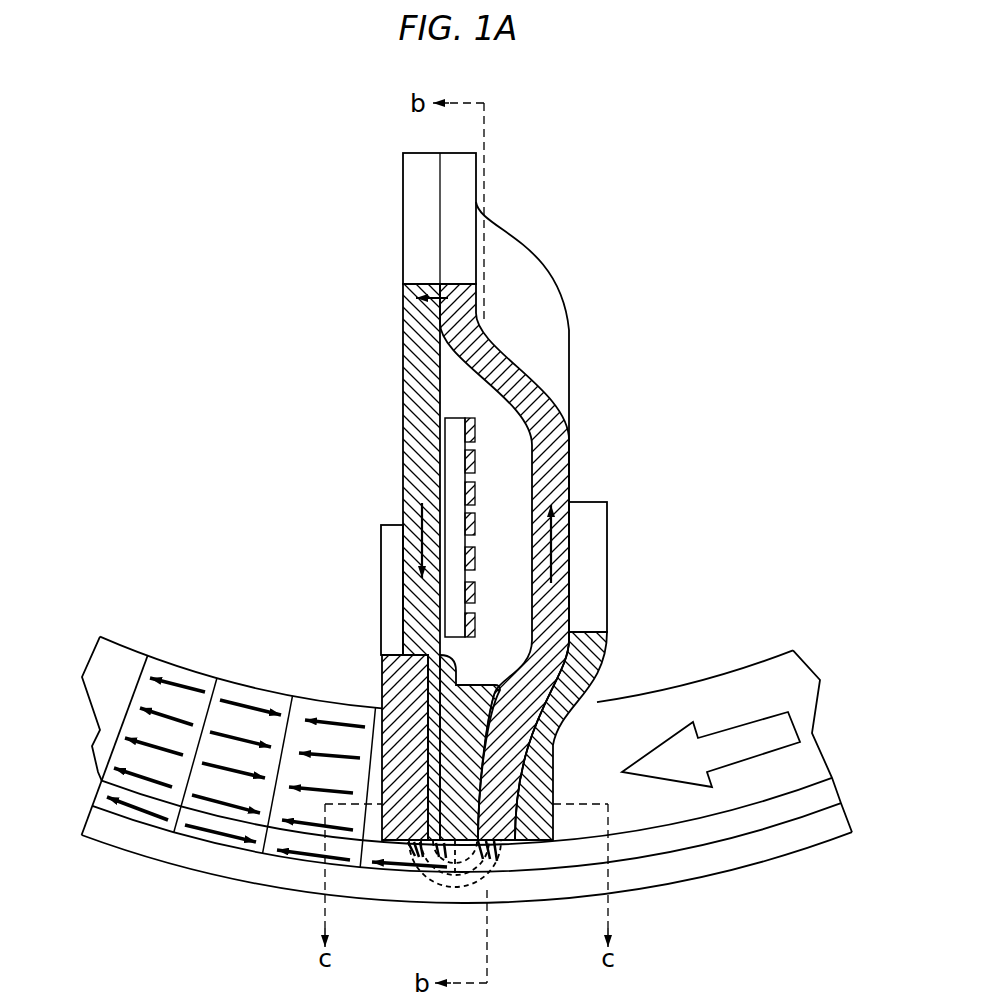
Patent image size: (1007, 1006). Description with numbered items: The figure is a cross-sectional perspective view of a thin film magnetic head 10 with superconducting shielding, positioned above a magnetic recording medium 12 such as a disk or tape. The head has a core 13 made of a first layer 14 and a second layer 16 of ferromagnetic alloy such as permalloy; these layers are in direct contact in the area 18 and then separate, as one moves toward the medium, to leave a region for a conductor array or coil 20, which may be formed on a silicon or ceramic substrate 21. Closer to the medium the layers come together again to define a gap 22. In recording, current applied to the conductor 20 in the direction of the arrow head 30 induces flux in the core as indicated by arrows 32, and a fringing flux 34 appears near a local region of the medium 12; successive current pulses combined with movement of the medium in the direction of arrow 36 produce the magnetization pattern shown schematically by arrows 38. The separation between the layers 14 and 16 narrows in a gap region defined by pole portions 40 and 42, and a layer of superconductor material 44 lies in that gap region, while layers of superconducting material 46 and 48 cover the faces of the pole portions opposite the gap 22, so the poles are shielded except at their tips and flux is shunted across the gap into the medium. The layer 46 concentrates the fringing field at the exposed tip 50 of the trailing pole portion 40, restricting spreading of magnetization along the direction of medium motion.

The thin film magnetic head 10 is at (512, 236).
The magnetic recording medium 12 is at (783, 860).
The core 13 is at (412, 207).
The first layer of ferromagnetic alloy 14 is at (403, 415).
The second layer of ferromagnetic alloy 16 is at (553, 415).
The contact area 18 is at (446, 316).
The conductor array or coil 20 is at (476, 489).
The substrate 21 is at (452, 481).
The gap 22 is at (486, 868).
The arrow head 30 is at (520, 468).
The arrows 32 is at (401, 540).
The fringing flux 34 is at (455, 906).
The arrow 36 is at (753, 736).
The arrows 38 is at (147, 813).
The pole portion 40 is at (438, 868).
The pole portion 42 is at (497, 822).
The layer of superconductor material 44 is at (463, 800).
The layer of superconducting material 46 is at (372, 828).
The layer of superconducting material 48 is at (538, 810).
The exposed tip 50 is at (417, 862).